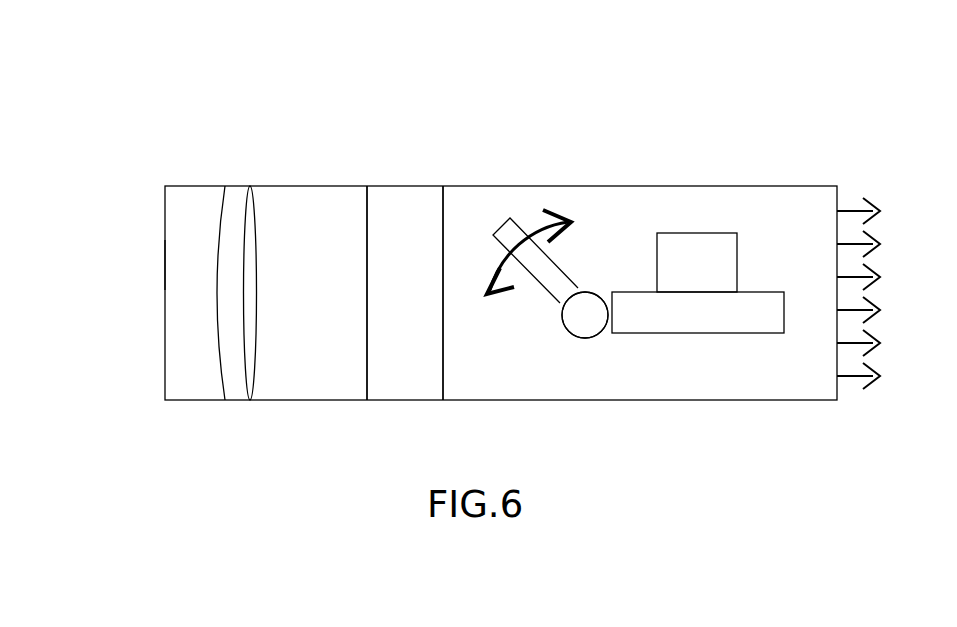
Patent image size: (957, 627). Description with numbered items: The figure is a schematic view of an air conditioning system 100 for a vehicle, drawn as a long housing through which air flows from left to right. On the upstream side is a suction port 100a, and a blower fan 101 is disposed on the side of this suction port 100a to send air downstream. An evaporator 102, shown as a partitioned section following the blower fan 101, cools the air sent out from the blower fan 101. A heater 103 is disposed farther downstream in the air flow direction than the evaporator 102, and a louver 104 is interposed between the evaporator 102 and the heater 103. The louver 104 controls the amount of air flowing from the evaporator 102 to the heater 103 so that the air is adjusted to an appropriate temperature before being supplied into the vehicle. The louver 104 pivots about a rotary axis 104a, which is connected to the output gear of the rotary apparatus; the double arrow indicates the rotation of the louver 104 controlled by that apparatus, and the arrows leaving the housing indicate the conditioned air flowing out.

The air conditioning system 100 is at (428, 31).
The suction port 100a is at (152, 265).
The blower fan 101 is at (233, 198).
The evaporator 102 is at (404, 200).
The heater 103 is at (690, 240).
The louver 104 is at (567, 270).
The rotary axis 104a is at (587, 318).